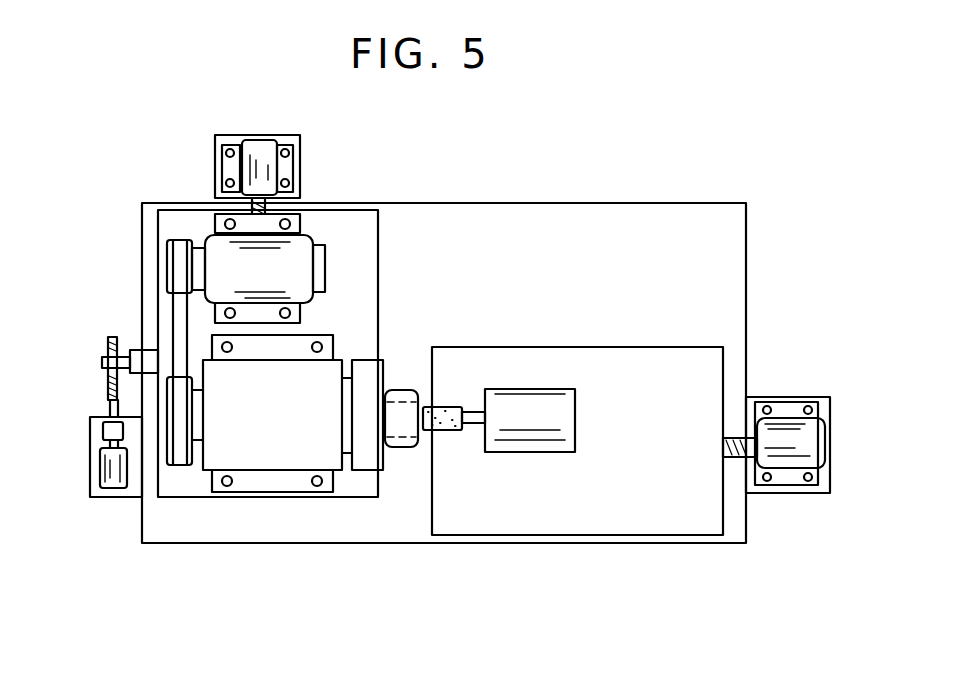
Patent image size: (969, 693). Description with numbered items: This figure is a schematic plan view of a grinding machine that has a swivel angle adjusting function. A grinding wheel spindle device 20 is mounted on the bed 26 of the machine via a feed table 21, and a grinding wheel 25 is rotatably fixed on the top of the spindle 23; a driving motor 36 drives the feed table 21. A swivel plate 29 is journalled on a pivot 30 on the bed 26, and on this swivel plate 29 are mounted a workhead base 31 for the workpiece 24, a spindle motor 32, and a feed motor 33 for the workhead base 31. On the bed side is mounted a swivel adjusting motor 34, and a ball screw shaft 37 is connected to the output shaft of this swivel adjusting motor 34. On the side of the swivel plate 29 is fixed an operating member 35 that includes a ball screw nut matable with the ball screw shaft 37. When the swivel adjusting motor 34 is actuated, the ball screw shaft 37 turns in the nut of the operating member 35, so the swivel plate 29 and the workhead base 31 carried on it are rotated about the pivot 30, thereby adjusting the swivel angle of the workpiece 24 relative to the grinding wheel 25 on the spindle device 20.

The grinding wheel spindle device 20 is at (540, 452).
The feed table 21 is at (632, 527).
The spindle 23 is at (474, 425).
The workpiece 24 is at (398, 447).
The grinding wheel 25 is at (440, 430).
The bed 26 is at (620, 203).
The swivel plate 29 is at (165, 230).
The pivot 30 is at (322, 415).
The workhead base 31 is at (336, 365).
The spindle motor 32 is at (212, 247).
The feed motor 33 is at (273, 168).
The swivel adjusting motor 34 is at (108, 497).
The operating member 35 is at (131, 350).
The driving motor 36 is at (788, 462).
The ball screw shaft 37 is at (108, 407).